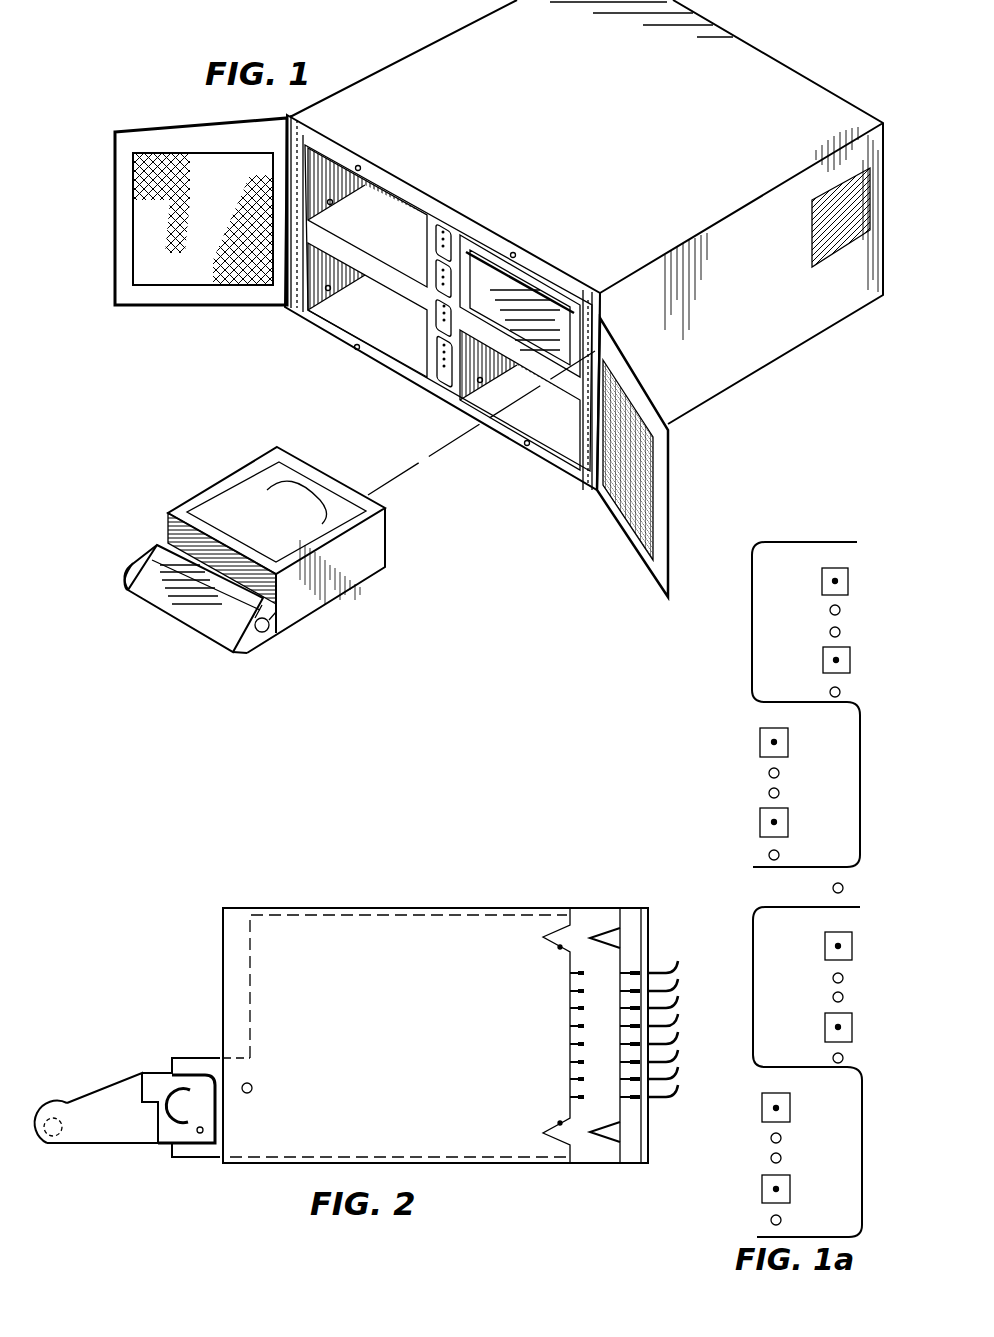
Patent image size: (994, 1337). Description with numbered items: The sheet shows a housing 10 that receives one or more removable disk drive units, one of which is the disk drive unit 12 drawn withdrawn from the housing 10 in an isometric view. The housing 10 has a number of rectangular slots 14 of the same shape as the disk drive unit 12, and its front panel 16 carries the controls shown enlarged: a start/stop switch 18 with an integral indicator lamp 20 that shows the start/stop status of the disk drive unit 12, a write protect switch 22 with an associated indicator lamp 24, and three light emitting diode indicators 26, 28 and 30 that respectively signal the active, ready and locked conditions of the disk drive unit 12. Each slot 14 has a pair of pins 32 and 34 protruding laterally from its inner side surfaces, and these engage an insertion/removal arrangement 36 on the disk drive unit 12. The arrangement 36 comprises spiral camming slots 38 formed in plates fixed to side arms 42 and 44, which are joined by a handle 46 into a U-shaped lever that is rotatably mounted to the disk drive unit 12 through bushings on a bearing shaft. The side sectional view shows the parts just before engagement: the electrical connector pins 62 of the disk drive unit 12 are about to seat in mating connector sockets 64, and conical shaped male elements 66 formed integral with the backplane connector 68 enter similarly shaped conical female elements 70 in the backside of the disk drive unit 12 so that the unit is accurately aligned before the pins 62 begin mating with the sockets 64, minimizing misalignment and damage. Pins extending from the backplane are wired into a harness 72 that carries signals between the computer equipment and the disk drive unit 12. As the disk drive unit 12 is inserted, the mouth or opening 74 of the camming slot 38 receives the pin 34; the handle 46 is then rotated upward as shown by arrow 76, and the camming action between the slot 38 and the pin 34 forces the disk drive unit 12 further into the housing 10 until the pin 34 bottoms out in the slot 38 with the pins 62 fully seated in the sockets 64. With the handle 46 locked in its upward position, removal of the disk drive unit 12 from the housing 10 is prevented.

In FIG. 1, the housing 10 is at (598, 148).
In FIG. 2, the housing 10 is at (530, 1163).
In FIG. 1, the disk drive unit 12 is at (320, 593).
In FIG. 2, the disk drive unit 12 is at (203, 1153).
In FIG. 1, the slots 14 is at (565, 437).
In FIG. 2, the slots 14 is at (285, 1158).
In FIG. 1a, the front panel 16 is at (822, 527).
In FIG. 1a, the start/stop switch 18 is at (851, 584).
In FIG. 1a, the indicator lamp 20 is at (845, 572).
In FIG. 1a, the write protect switch 22 is at (850, 668).
In FIG. 1a, the indicator lamp 24 is at (850, 657).
In FIG. 1a, the light emitting diode indicator 26 is at (843, 693).
In FIG. 1a, the light emitting diode indicator 28 is at (843, 632).
In FIG. 1a, the light emitting diode indicator 30 is at (843, 610).
In FIG. 1, the pin 32 is at (482, 380).
In FIG. 2, the pin 34 is at (251, 1091).
In FIG. 1, the insertion/removal arrangement 36 is at (247, 656).
In FIG. 2, the insertion/removal arrangement 36 is at (133, 1043).
In FIG. 1, the camming slot 38 is at (260, 623).
In FIG. 2, the camming slot 38 is at (187, 1087).
In FIG. 1, the side arm 42 is at (233, 650).
In FIG. 2, the side arm 42 is at (93, 1133).
In FIG. 1, the side arm 44 is at (133, 563).
In FIG. 1, the handle 46 is at (170, 613).
In FIG. 2, the handle 46 is at (43, 1147).
In FIG. 2, the electrical connector pins 62 is at (584, 1005).
In FIG. 2, the connector sockets 64 is at (618, 1010).
In FIG. 2, the conical shaped male elements 66 is at (618, 925).
In FIG. 2, the backplane connector 68 is at (637, 1120).
In FIG. 2, the conical female elements 70 is at (560, 946).
In FIG. 2, the harness 72 is at (694, 981).
In FIG. 2, the opening 74 is at (187, 1090).
In FIG. 2, the arrow 76 is at (98, 1036).